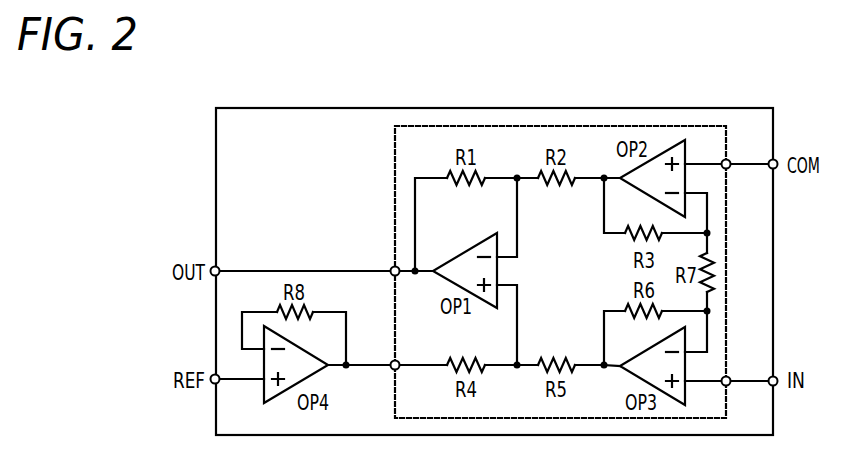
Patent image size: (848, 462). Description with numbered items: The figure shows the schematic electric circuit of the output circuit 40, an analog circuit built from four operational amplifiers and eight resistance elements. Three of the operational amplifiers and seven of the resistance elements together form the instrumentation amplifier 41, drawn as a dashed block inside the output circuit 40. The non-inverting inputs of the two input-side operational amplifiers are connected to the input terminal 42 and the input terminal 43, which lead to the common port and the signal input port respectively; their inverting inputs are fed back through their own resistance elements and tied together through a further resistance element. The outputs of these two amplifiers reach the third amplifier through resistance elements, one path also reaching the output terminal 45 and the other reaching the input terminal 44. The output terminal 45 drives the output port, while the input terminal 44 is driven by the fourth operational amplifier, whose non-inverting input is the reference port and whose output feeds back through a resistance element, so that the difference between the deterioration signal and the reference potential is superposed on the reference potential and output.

The output circuit 40 is at (575, 108).
The instrumentation amplifier 41 is at (394, 162).
The input terminal 42 is at (727, 169).
The input terminal 43 is at (728, 377).
The input terminal 44 is at (394, 370).
The output terminal 45 is at (392, 268).